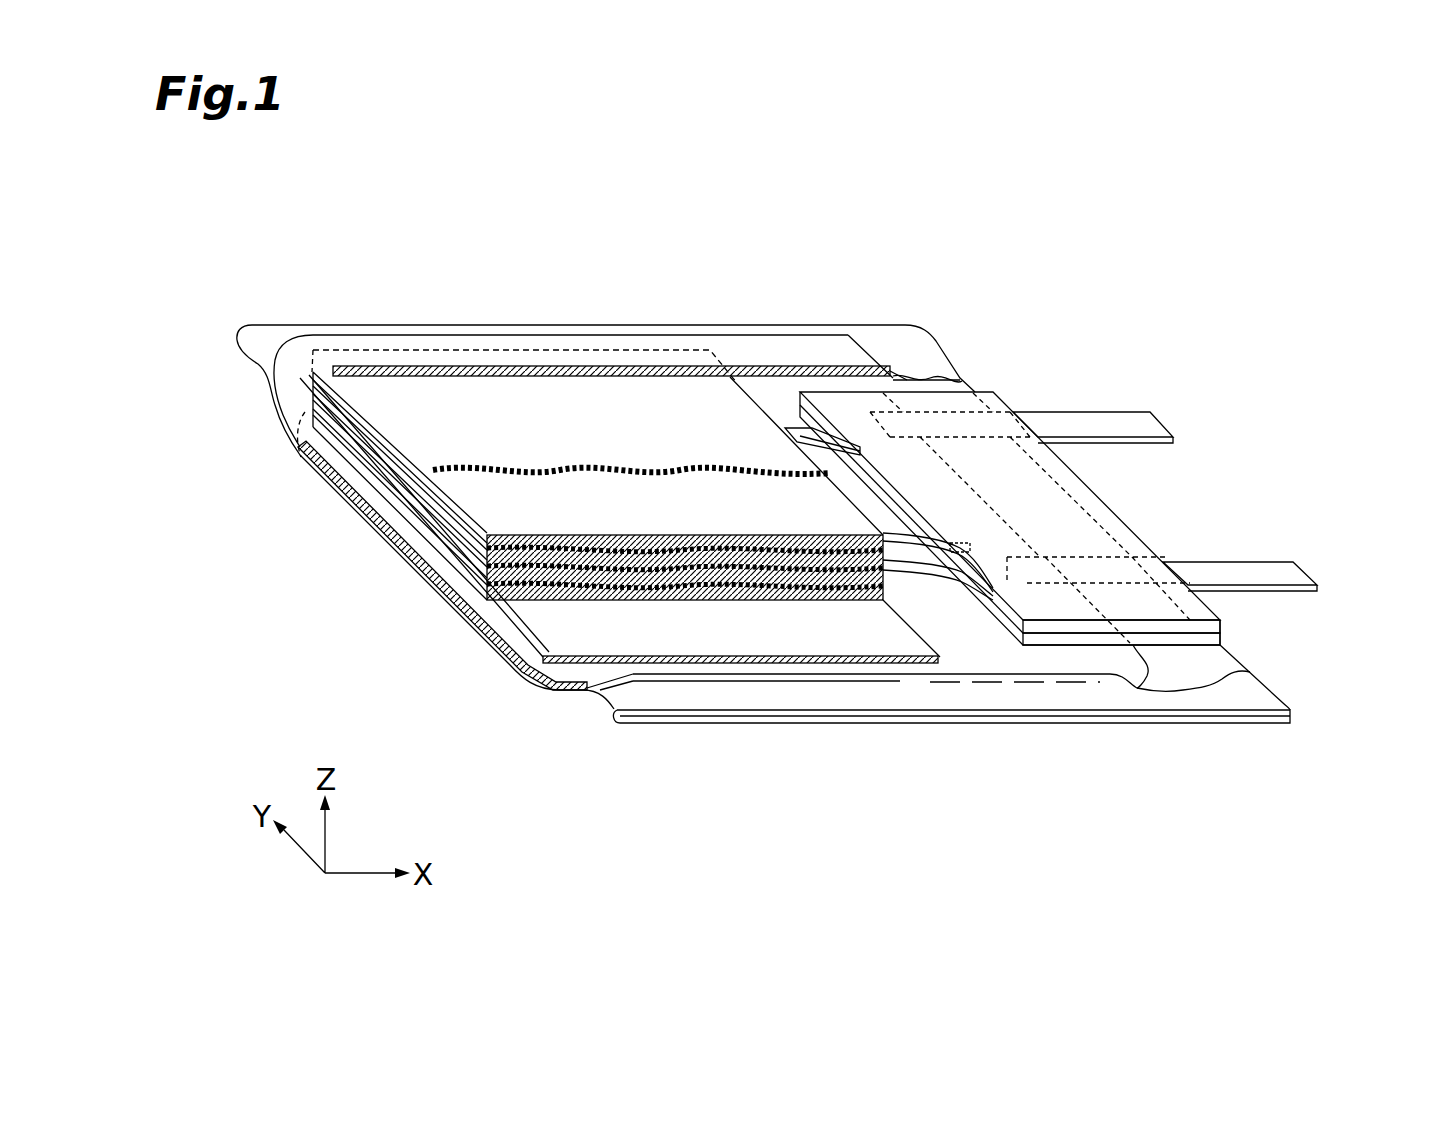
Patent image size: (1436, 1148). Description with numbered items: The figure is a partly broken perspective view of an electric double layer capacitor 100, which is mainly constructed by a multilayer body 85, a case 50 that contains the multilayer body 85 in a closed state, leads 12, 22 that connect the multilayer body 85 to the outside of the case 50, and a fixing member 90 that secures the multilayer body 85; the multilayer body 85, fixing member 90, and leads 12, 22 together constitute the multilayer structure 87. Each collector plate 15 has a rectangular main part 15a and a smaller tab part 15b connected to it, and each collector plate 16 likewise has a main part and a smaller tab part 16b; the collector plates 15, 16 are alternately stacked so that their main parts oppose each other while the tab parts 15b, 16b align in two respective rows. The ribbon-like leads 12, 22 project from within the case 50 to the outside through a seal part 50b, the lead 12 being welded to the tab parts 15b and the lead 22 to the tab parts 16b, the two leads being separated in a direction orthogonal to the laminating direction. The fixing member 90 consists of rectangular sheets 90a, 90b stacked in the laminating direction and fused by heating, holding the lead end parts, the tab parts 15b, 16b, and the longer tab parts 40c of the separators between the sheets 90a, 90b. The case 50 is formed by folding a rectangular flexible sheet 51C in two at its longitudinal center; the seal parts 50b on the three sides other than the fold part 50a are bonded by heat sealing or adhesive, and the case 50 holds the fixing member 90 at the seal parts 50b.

The electric double layer capacitor 100 is at (519, 203).
The multilayer structure 87 is at (620, 158).
The multilayer body 85 is at (598, 388).
The fixing member 90 is at (1103, 422).
The rectangular sheet 90a is at (1223, 627).
The rectangular sheet 90b is at (1223, 638).
The lead 12 is at (1070, 420).
The lead 22 is at (1283, 567).
The collector plate 15 is at (828, 236).
The main part 15a is at (673, 393).
The tab part 15b is at (793, 417).
The collector plate 16 is at (400, 520).
The tab part 16b is at (928, 590).
The case 50 is at (521, 326).
The fold part 50a is at (282, 385).
The seal part 50b is at (650, 332).
The rectangular flexible sheet 51C is at (738, 330).
The longer tab part 40c is at (958, 486).